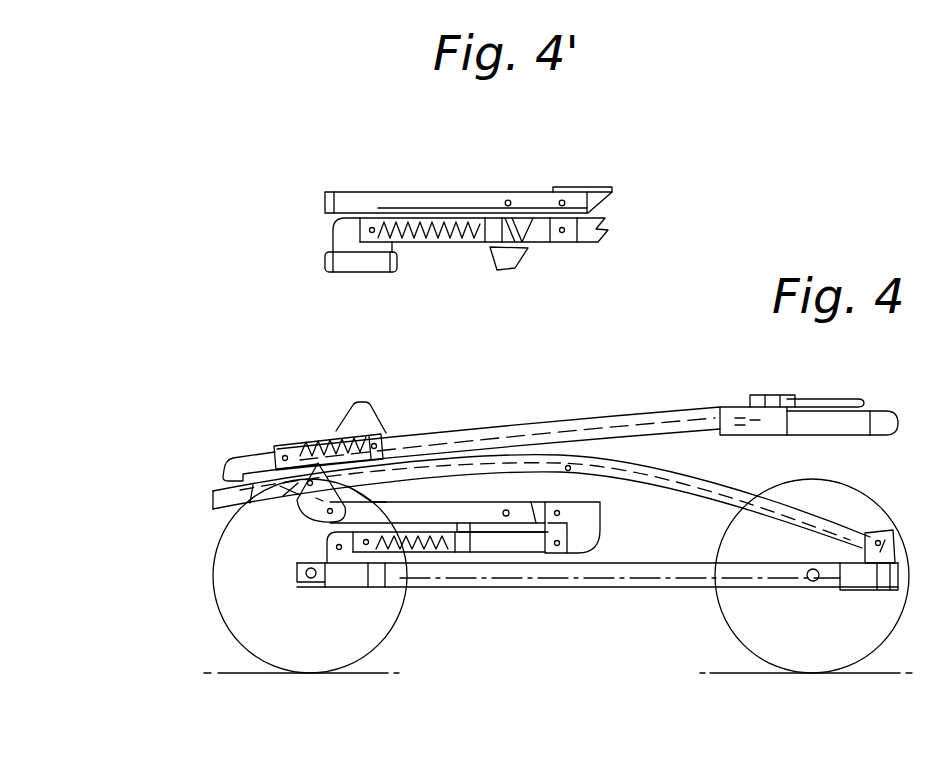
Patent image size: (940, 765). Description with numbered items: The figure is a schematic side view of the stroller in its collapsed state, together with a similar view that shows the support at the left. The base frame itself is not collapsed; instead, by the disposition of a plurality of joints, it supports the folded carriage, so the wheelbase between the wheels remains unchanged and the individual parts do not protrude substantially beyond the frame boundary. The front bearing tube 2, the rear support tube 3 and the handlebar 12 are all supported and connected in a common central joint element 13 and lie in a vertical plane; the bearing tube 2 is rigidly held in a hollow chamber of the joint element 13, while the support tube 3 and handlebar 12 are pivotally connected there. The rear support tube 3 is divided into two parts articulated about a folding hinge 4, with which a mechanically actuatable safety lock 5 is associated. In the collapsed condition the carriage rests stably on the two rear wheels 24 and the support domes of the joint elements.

In FIG. 4, the front bearing tube 2 is at (738, 492).
In FIG. 4', the rear support tube 3 is at (473, 192).
In FIG. 4, the rear support tube 3 is at (470, 515).
In FIG. 4', the folding hinge 4 is at (597, 230).
In FIG. 4', the safety lock 5 is at (514, 258).
In FIG. 4, the handlebar 12 is at (640, 420).
In FIG. 4, the central joint element 13 is at (300, 490).
In FIG. 4, the rear wheel 24 is at (249, 611).